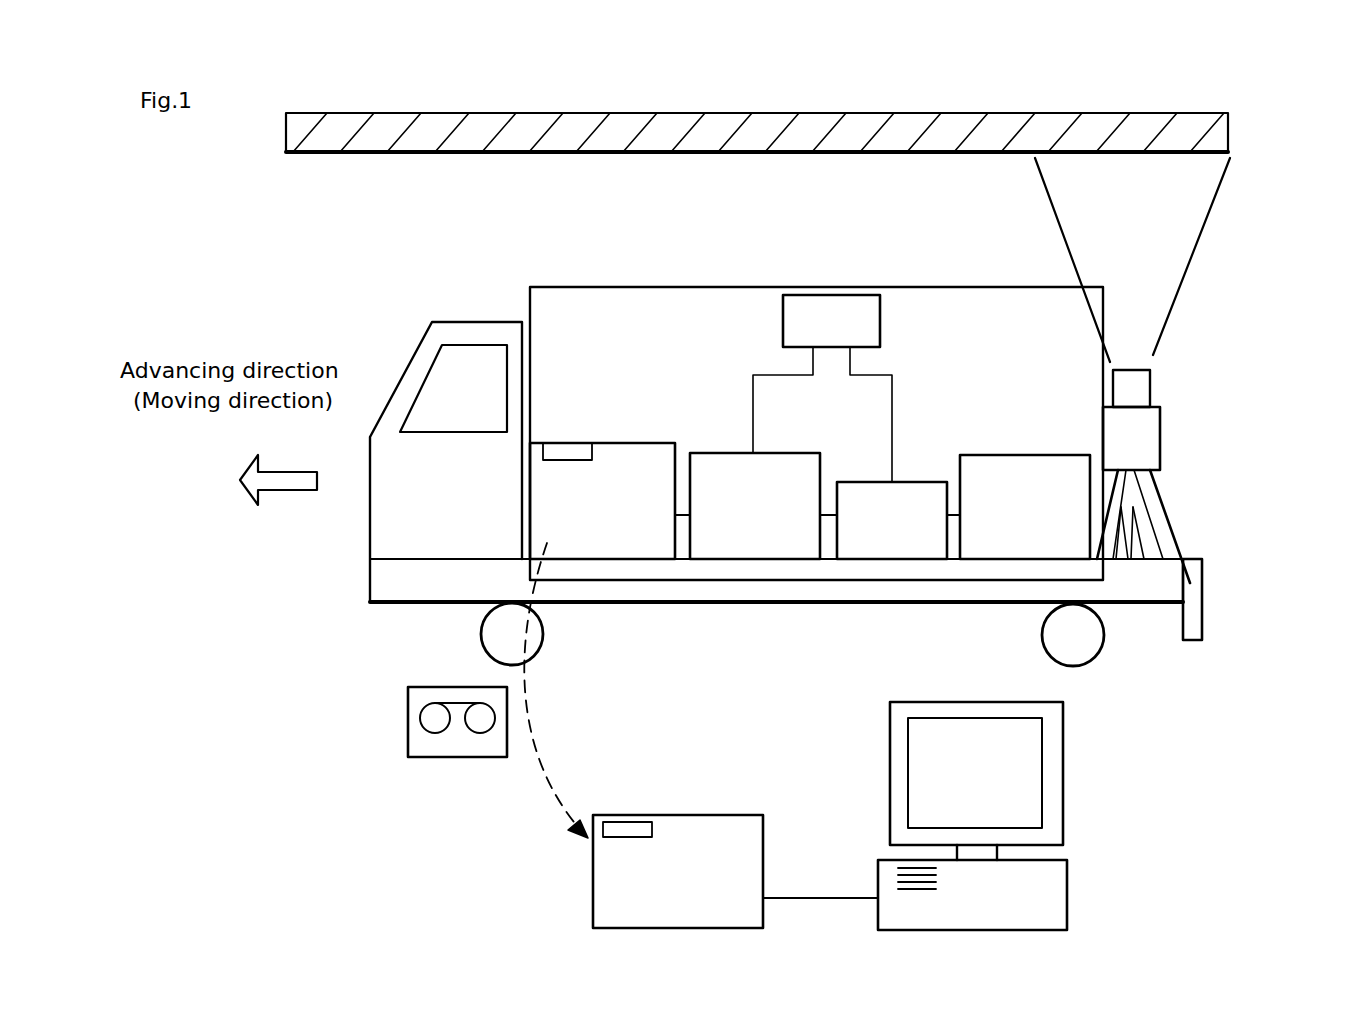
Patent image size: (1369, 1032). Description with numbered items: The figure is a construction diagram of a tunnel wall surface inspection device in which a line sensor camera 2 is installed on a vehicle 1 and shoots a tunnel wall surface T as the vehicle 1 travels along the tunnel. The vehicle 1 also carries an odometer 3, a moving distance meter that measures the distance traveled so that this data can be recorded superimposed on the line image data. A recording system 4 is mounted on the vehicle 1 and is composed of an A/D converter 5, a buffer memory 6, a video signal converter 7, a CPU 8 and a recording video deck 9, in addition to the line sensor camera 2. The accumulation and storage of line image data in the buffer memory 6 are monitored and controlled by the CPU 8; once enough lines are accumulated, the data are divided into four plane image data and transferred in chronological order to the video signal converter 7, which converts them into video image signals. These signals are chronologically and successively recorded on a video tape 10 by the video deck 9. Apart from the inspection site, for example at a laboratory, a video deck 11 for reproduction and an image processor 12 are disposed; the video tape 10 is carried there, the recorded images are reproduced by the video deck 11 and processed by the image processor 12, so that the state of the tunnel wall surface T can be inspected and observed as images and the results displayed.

The tunnel wall surface T is at (415, 152).
The vehicle 1 is at (447, 503).
The line sensor camera 2 is at (1142, 448).
The odometer 3 is at (1202, 615).
The recording system 4 is at (692, 568).
The A/D converter 5 is at (1038, 455).
The buffer memory 6 is at (921, 482).
The video signal converter 7 is at (797, 453).
The CPU 8 is at (884, 322).
The recording video deck 9 is at (638, 443).
The video tape 10 is at (442, 757).
The video deck for reproduction 11 is at (593, 868).
The image processor 12 is at (1068, 917).